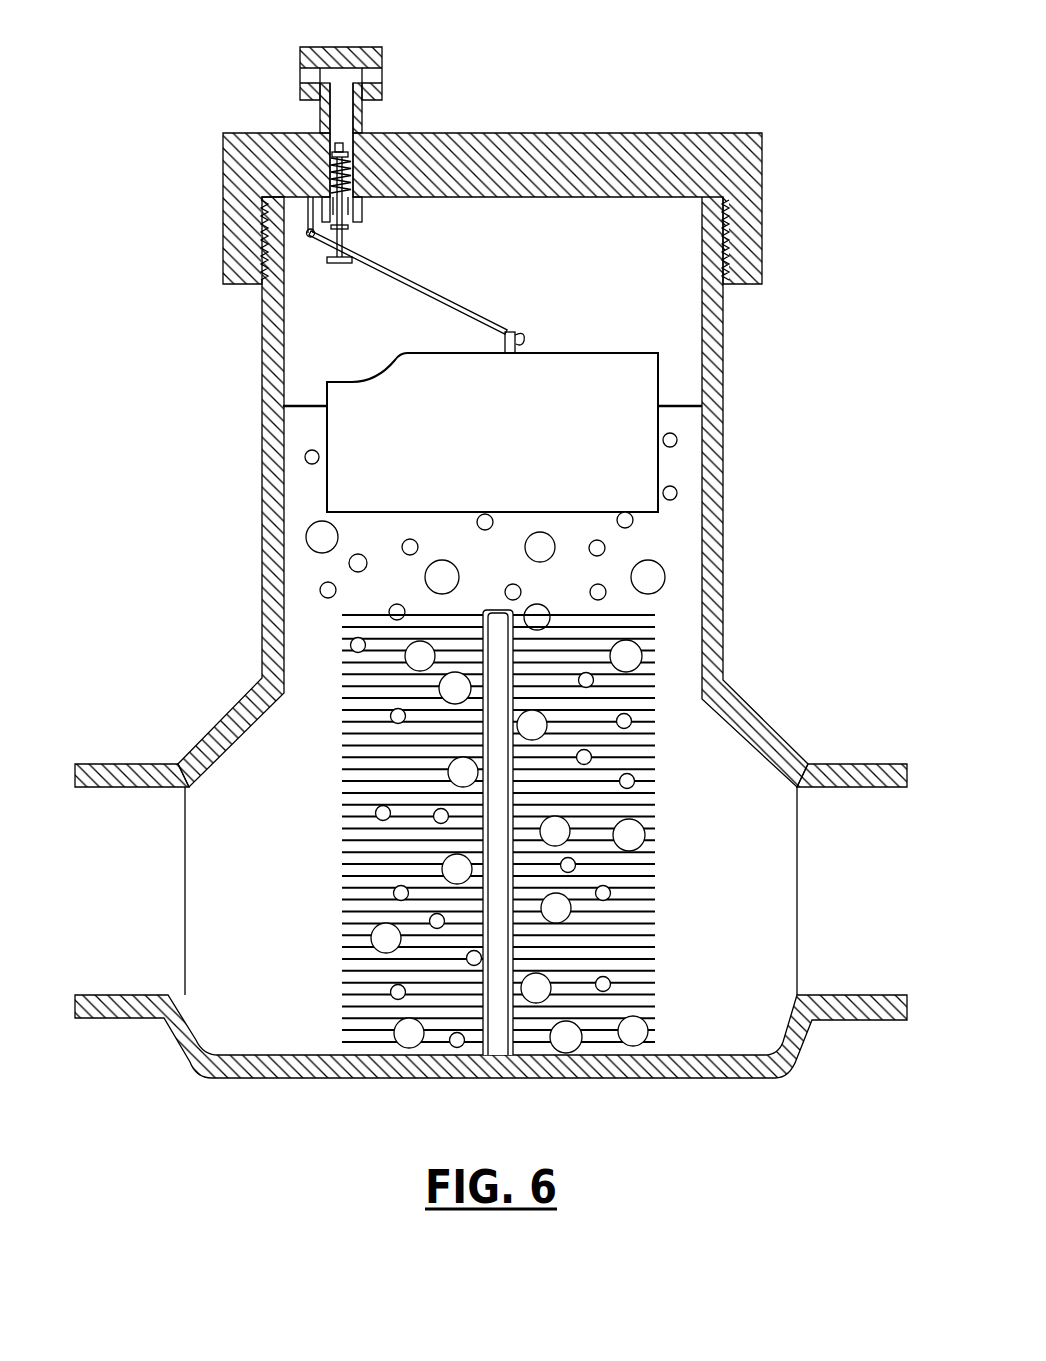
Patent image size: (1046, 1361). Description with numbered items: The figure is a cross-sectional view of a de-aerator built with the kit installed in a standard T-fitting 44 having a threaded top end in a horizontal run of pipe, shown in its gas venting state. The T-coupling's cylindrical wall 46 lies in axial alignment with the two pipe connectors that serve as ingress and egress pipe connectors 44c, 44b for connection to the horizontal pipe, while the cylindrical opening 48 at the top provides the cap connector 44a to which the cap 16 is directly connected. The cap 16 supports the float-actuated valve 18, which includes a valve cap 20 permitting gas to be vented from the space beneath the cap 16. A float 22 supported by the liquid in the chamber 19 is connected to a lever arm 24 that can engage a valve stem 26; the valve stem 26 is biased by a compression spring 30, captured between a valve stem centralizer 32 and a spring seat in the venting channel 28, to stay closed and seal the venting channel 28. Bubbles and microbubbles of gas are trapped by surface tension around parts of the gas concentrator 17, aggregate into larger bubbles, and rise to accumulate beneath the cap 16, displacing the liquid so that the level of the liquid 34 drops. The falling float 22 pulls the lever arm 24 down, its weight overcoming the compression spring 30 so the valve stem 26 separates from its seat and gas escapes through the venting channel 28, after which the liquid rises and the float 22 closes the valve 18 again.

The cap 16 is at (770, 209).
The gas concentrator 17 is at (621, 1040).
The float-actuated valve 18 is at (363, 122).
The chamber 19 is at (713, 902).
The valve cap 20 is at (382, 57).
The float 22 is at (524, 446).
The lever arm 24 is at (435, 297).
The valve stem 26 is at (347, 238).
The venting channel 28 is at (335, 117).
The compression spring 30 is at (330, 167).
The valve stem centralizer 32 is at (347, 157).
The level of the liquid 34 is at (312, 402).
The T-fitting 44 is at (728, 585).
The cap connector 44a is at (722, 345).
The egress pipe connector 44b is at (860, 764).
The ingress pipe connector 44c is at (106, 764).
The cylindrical wall 46 is at (306, 1055).
The cylindrical opening 48 is at (628, 282).